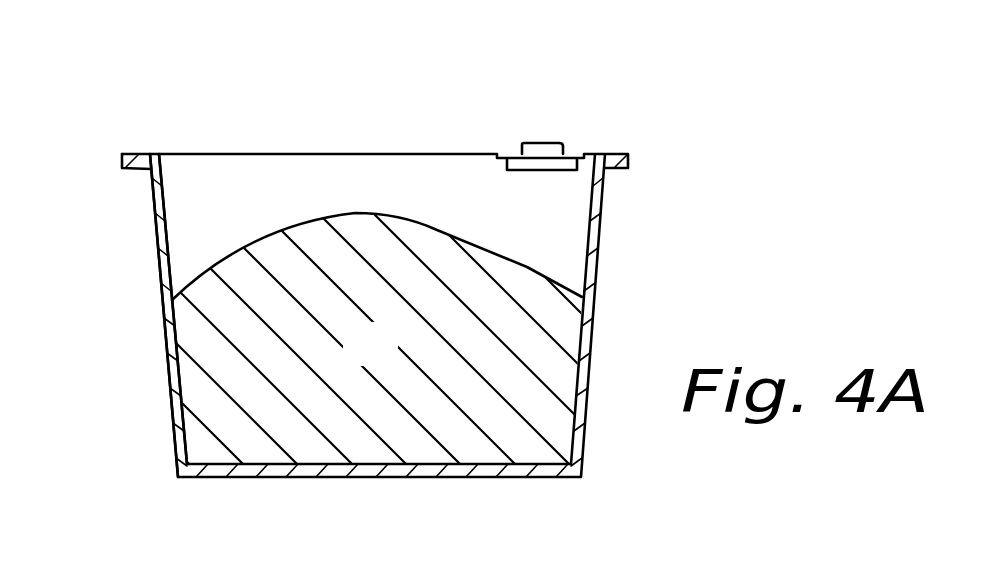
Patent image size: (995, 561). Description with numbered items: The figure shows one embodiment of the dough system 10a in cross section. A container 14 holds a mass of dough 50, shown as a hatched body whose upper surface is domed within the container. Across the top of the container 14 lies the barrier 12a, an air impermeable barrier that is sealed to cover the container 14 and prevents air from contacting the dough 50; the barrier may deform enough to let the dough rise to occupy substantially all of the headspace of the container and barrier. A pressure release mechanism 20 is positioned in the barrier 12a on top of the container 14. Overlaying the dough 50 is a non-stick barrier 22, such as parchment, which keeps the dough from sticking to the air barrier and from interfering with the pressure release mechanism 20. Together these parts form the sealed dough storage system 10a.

The dough system 10a is at (390, 272).
The barrier 12a is at (148, 154).
The container 14 is at (160, 346).
The pressure release mechanism 20 is at (536, 143).
The non-stick barrier 22 is at (317, 215).
The dough 50 is at (384, 363).